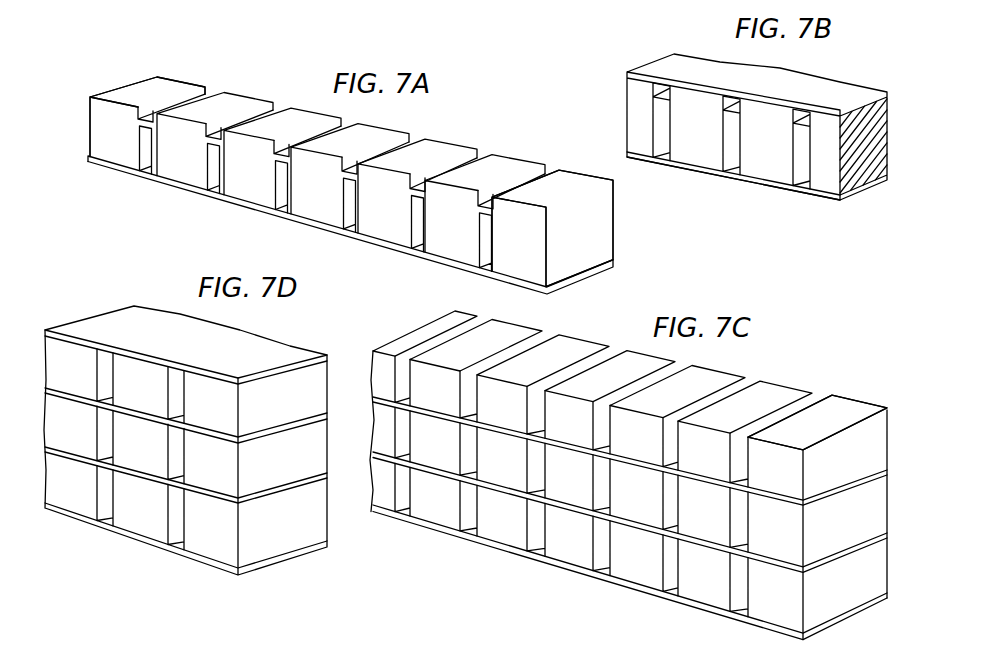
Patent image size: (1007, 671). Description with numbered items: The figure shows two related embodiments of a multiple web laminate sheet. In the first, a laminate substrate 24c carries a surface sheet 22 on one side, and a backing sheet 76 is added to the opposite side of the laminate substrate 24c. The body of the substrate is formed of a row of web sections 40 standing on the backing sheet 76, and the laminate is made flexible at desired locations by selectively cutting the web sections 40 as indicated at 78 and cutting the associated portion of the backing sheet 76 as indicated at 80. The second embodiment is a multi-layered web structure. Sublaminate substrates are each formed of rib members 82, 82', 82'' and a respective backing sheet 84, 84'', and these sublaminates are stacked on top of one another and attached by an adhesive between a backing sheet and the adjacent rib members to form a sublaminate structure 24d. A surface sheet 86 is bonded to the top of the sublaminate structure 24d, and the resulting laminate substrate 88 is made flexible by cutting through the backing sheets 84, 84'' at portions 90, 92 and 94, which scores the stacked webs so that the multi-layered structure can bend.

In FIG. 7A, the laminate substrate 24c is at (88, 78).
In FIG. 7A, the web sections 40 is at (146, 131).
In FIG. 7A, the cut in web sections 78 is at (410, 187).
In FIG. 7A, the backing sheet 76 is at (311, 222).
In FIG. 7B, the backing sheet 76 is at (753, 185).
In FIG. 7A, the cut in backing sheet 80 is at (412, 250).
In FIG. 7B, the surface sheet 22 is at (685, 68).
In FIG. 7D, the laminate substrate 88 is at (85, 311).
In FIG. 7D, the surface sheet 86 is at (248, 350).
In FIG. 7D, the cut portion of backing sheet 90 is at (177, 430).
In FIG. 7D, the cut portion of backing sheet 92 is at (173, 490).
In FIG. 7D, the cut portion of backing sheet 94 is at (173, 552).
In FIG. 7C, the sublaminate structure 24d is at (823, 374).
In FIG. 7C, the rib members 82 is at (630, 399).
In FIG. 7C, the rib members 82' is at (571, 479).
In FIG. 7C, the rib members 82'' is at (599, 539).
In FIG. 7C, the backing sheet 84 is at (630, 484).
In FIG. 7C, the backing sheet 84'' is at (630, 572).